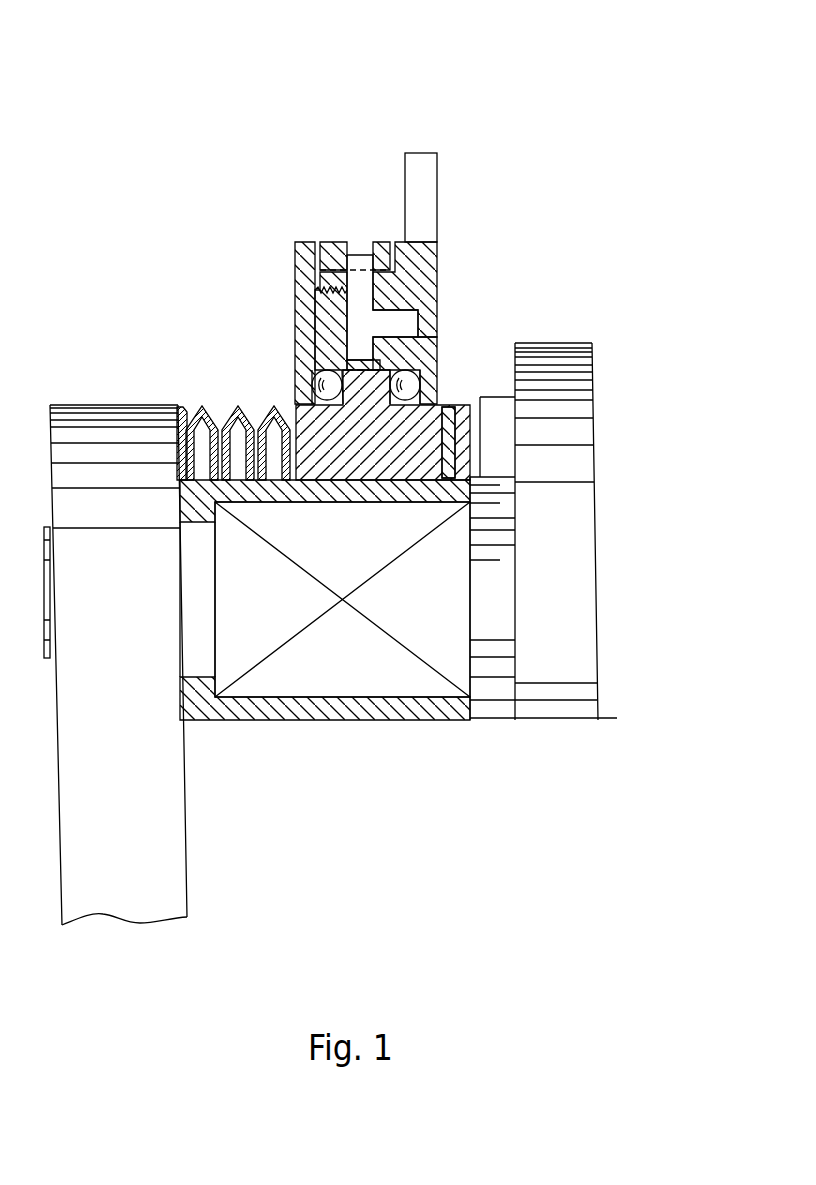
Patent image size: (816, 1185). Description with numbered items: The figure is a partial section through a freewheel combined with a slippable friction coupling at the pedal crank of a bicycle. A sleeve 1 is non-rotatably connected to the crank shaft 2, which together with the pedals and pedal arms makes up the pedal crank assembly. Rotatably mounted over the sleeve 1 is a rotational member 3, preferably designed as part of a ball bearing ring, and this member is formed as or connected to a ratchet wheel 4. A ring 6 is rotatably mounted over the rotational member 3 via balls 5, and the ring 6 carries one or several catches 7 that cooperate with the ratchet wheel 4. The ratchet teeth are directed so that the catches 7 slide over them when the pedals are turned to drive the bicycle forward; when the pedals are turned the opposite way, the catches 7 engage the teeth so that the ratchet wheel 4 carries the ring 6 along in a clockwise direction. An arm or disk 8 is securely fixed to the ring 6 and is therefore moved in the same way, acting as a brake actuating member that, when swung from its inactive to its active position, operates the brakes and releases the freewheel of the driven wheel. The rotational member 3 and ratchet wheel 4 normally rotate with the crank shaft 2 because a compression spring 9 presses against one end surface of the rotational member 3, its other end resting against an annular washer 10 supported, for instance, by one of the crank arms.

The sleeve 1 is at (470, 495).
The crank shaft 2 is at (460, 637).
The rotational member 3 is at (425, 452).
The ratchet wheel 4 is at (420, 340).
The balls 5 is at (410, 383).
The ring 6 is at (420, 257).
The catch 7 is at (364, 300).
The arm or disk 8 is at (425, 197).
The compression spring 9 is at (228, 410).
The annular washer 10 is at (180, 412).